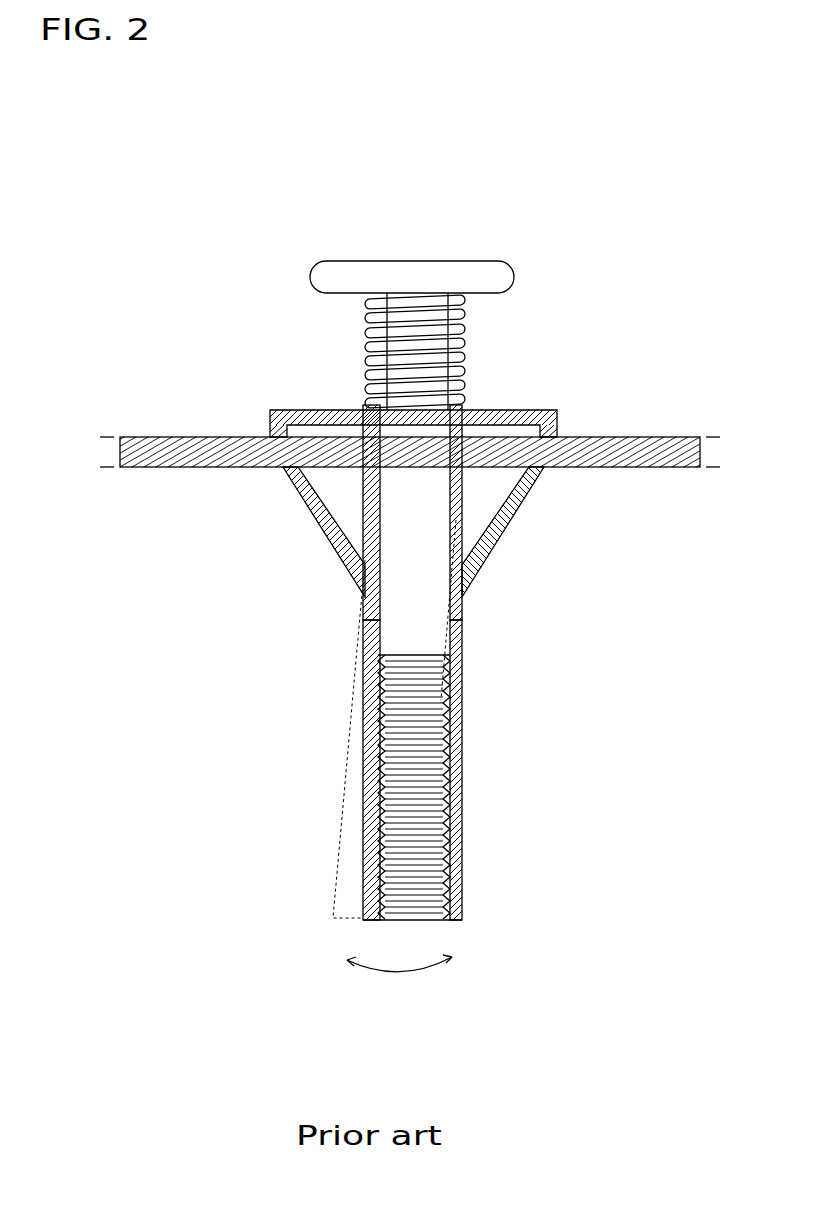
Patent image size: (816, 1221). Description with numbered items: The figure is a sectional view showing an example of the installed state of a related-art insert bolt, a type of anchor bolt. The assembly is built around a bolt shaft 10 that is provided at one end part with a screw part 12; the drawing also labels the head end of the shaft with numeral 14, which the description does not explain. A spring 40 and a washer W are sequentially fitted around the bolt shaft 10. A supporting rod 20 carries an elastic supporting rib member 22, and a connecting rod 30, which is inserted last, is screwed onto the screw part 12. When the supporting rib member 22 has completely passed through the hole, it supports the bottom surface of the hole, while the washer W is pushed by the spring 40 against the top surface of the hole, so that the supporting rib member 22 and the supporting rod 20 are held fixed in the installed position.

The bolt shaft 10 is at (468, 333).
The screw part 12 is at (445, 703).
The bolt head 14 is at (371, 275).
The supporting rod 20 is at (365, 512).
The supporting rib member 22 is at (497, 527).
The connecting rod 30 is at (462, 820).
The spring 40 is at (365, 354).
The washer W is at (548, 410).